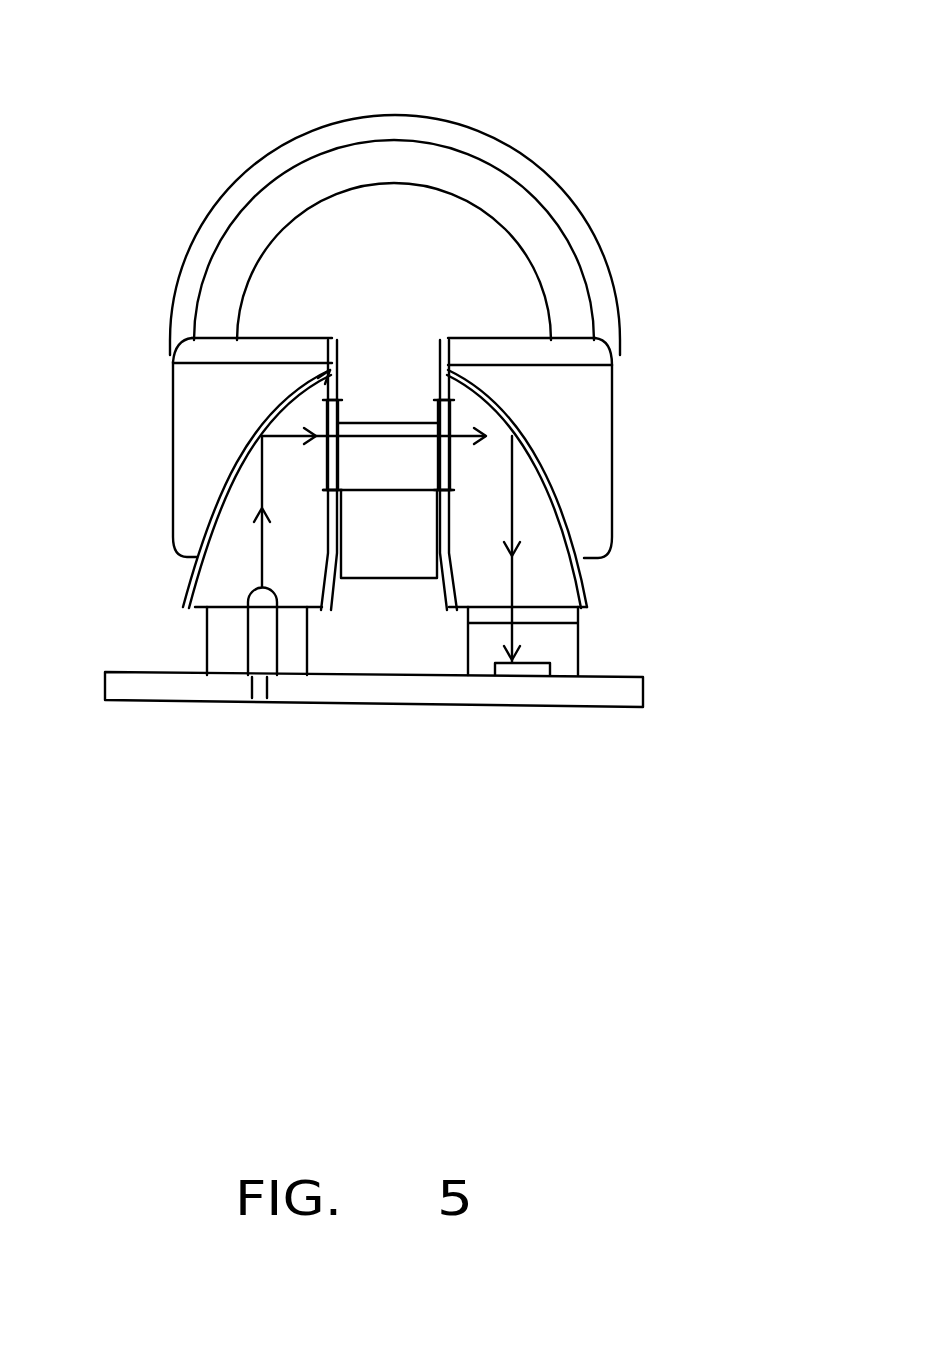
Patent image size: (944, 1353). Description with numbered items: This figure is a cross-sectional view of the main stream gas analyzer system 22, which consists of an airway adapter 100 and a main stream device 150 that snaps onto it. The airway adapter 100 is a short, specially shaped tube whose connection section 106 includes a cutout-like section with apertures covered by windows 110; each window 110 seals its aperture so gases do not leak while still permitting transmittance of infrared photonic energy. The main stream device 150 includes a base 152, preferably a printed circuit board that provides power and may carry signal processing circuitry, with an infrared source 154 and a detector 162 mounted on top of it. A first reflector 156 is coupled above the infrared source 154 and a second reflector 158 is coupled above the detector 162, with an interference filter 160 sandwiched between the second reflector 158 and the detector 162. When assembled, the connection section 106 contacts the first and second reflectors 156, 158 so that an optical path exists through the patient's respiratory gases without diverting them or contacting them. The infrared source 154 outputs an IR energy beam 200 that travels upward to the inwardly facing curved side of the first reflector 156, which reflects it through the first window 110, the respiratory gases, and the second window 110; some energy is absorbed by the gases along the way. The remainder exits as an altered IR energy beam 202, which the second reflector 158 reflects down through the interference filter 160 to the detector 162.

The main stream gas analyzer system 22 is at (566, 63).
The airway adapter 100 is at (602, 268).
The connection section 106 is at (195, 417).
The window 110 is at (330, 415).
The main stream device 150 is at (377, 731).
The base 152 is at (173, 690).
The infrared (IR) source 154 is at (258, 635).
The first reflector 156 is at (210, 567).
The second reflector 158 is at (550, 530).
The interference filter 160 is at (573, 617).
The detector 162 is at (540, 670).
The IR energy beam 200 is at (262, 538).
The altered IR energy beam 202 is at (508, 583).